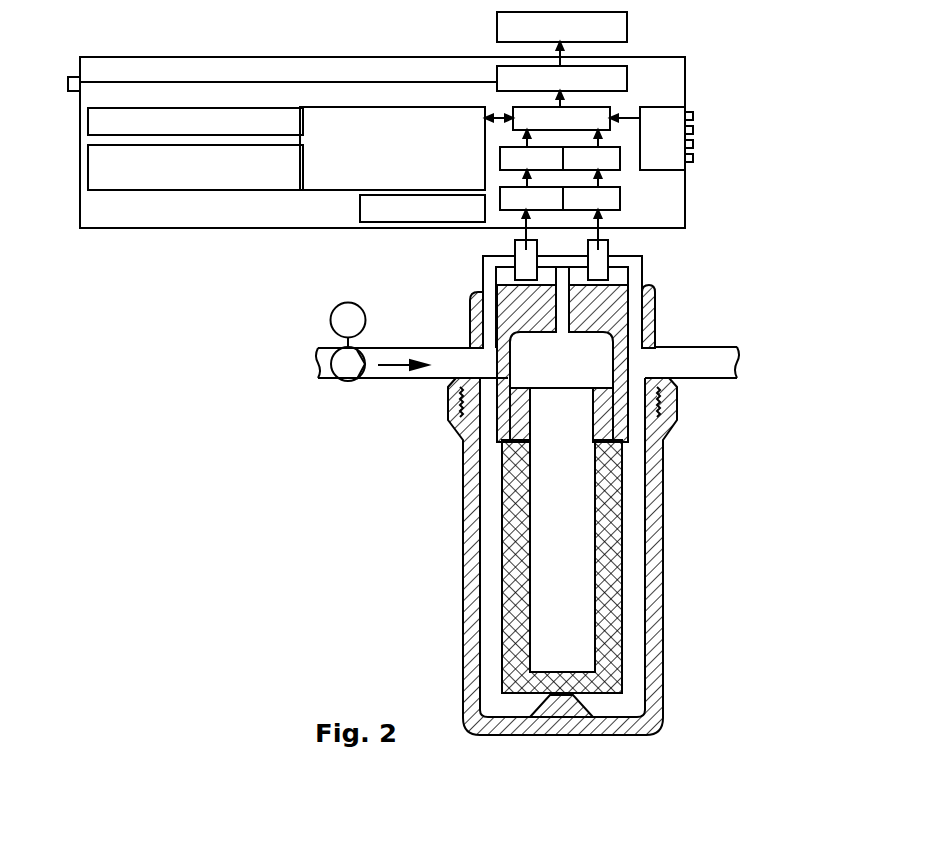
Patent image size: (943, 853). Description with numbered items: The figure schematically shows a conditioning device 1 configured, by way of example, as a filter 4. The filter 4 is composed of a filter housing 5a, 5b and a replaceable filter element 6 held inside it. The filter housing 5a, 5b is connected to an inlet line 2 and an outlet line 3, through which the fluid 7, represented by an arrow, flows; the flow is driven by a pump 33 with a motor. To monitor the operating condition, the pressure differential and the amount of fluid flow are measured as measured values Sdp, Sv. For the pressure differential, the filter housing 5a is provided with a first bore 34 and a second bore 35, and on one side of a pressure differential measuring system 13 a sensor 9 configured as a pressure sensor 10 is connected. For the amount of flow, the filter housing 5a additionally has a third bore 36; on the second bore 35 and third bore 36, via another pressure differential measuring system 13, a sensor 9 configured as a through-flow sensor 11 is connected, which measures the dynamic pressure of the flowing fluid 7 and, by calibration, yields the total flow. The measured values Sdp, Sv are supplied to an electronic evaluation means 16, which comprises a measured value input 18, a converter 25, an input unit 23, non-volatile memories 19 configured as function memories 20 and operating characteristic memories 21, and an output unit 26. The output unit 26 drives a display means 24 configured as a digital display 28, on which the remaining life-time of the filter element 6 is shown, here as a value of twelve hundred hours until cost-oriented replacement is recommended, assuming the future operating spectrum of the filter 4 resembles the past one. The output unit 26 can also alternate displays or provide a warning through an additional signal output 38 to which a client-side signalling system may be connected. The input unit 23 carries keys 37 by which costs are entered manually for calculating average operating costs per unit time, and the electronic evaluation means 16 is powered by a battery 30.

The conditioning device 1 is at (595, 556).
The inlet line 2 is at (408, 378).
The outlet line 3 is at (714, 378).
The filter 4 is at (595, 556).
The filter housing 5a is at (655, 330).
The filter housing 5b is at (664, 592).
The filter element 6 is at (622, 650).
The fluid 7 is at (390, 358).
The sensor 9 is at (418, 253).
The pressure sensor 10 is at (605, 245).
The through-flow sensor 11 is at (418, 253).
The pressure differential measuring system 13 is at (517, 245).
The electronic evaluation means 16 is at (685, 65).
The measured value input 18 is at (620, 200).
The non-volatile memories 19 is at (322, 120).
The function memories 20 is at (88, 116).
The operating characteristic memories 21 is at (88, 158).
The input unit 23 is at (662, 107).
The display means 24 is at (616, 22).
The converter 25 is at (620, 165).
The output unit 26 is at (627, 80).
The digital display 28 is at (627, 24).
The battery 30 is at (358, 220).
The pump 33 is at (356, 380).
The first bore 34 is at (650, 296).
The second bore 35 is at (560, 330).
The third bore 36 is at (483, 296).
The keys 37 is at (694, 128).
The additional signal output 38 is at (70, 84).
The measured value of fluid flow Sv is at (418, 253).
The measured value of pressure differential Sdp is at (701, 245).